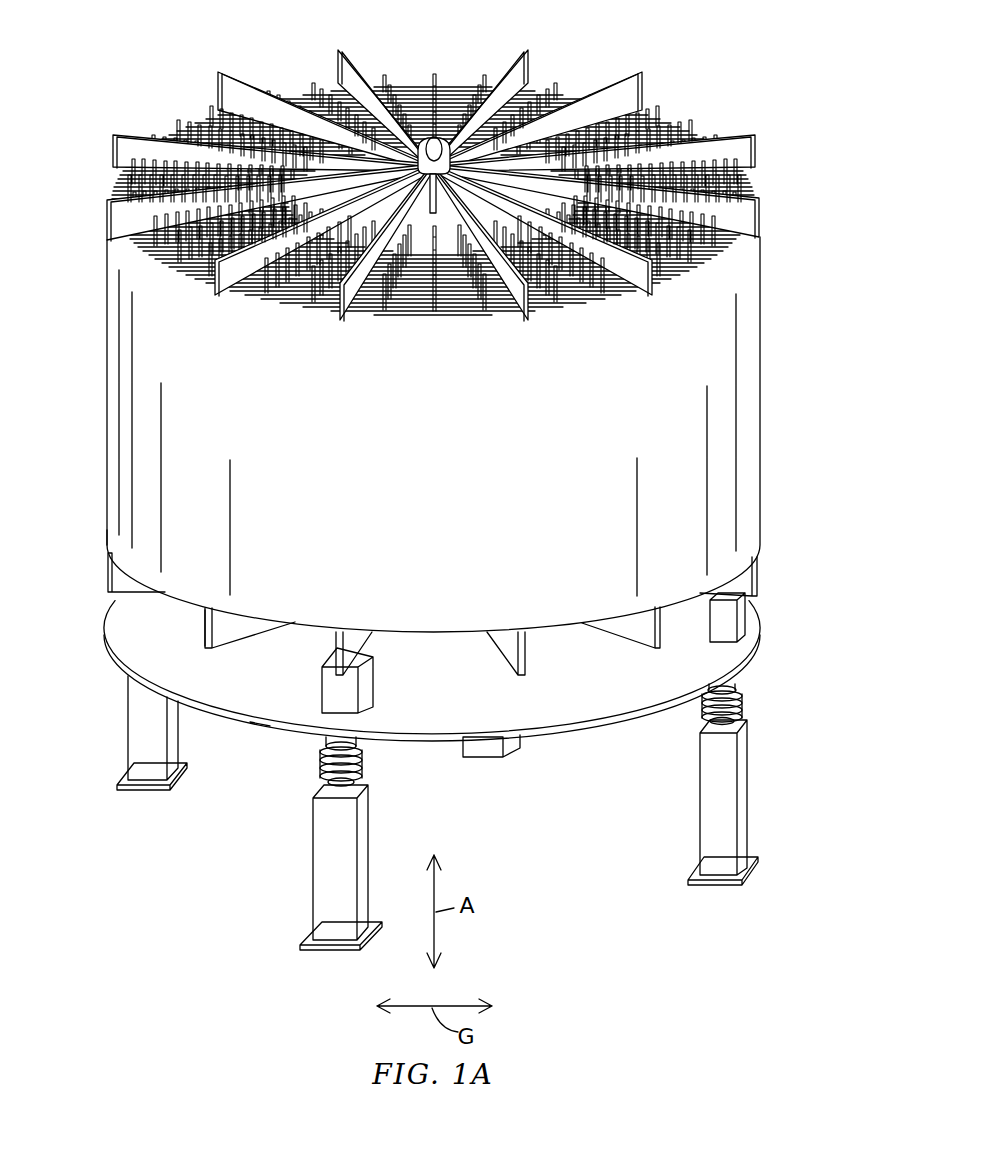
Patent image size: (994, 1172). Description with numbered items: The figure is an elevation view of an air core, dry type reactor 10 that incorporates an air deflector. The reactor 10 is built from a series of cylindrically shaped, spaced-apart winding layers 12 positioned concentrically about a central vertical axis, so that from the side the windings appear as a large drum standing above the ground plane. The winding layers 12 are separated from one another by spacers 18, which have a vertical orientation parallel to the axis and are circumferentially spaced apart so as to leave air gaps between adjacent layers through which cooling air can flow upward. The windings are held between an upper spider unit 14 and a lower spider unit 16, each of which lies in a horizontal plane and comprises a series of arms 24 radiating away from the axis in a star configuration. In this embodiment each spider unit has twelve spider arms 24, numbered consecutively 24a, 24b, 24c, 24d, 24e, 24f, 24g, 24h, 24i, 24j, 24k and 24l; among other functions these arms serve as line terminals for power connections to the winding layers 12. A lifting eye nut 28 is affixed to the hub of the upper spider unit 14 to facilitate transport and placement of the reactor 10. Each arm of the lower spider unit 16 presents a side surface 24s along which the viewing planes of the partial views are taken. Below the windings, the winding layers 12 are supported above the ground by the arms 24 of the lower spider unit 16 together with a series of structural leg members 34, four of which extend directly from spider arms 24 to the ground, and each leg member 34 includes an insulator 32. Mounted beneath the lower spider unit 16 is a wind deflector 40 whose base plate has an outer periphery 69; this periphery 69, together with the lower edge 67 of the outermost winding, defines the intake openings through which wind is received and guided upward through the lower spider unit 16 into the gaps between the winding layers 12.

The air core dry type reactor 10 is at (626, 38).
The winding layers 12 is at (421, 506).
The upper spider unit 14 is at (752, 101).
The lower spider unit 16 is at (776, 598).
The spacers 18 is at (245, 112).
The spider arms 24 is at (636, 102).
The spider arm 24a is at (727, 213).
The spider arm 24b is at (635, 290).
The spider arm 24c is at (516, 306).
The spider arm 24d is at (346, 310).
The spider arm 24e is at (232, 290).
The spider arm 24f is at (138, 215).
The spider arm 24g is at (114, 130).
The spider arm 24h is at (226, 75).
The spider arm 24i is at (340, 56).
The spider arm 24j is at (530, 55).
The spider arm 24k is at (645, 86).
The spider arm 24l is at (733, 144).
The arm side surface 24s is at (237, 627).
The lifting eye nut 28 is at (432, 130).
The insulator 32 is at (360, 752).
The structural leg members 34 is at (128, 722).
The wind deflector 40 is at (584, 737).
The lower edge of outermost winding 67 is at (107, 535).
The outer periphery of deflector base plate 69 is at (258, 722).